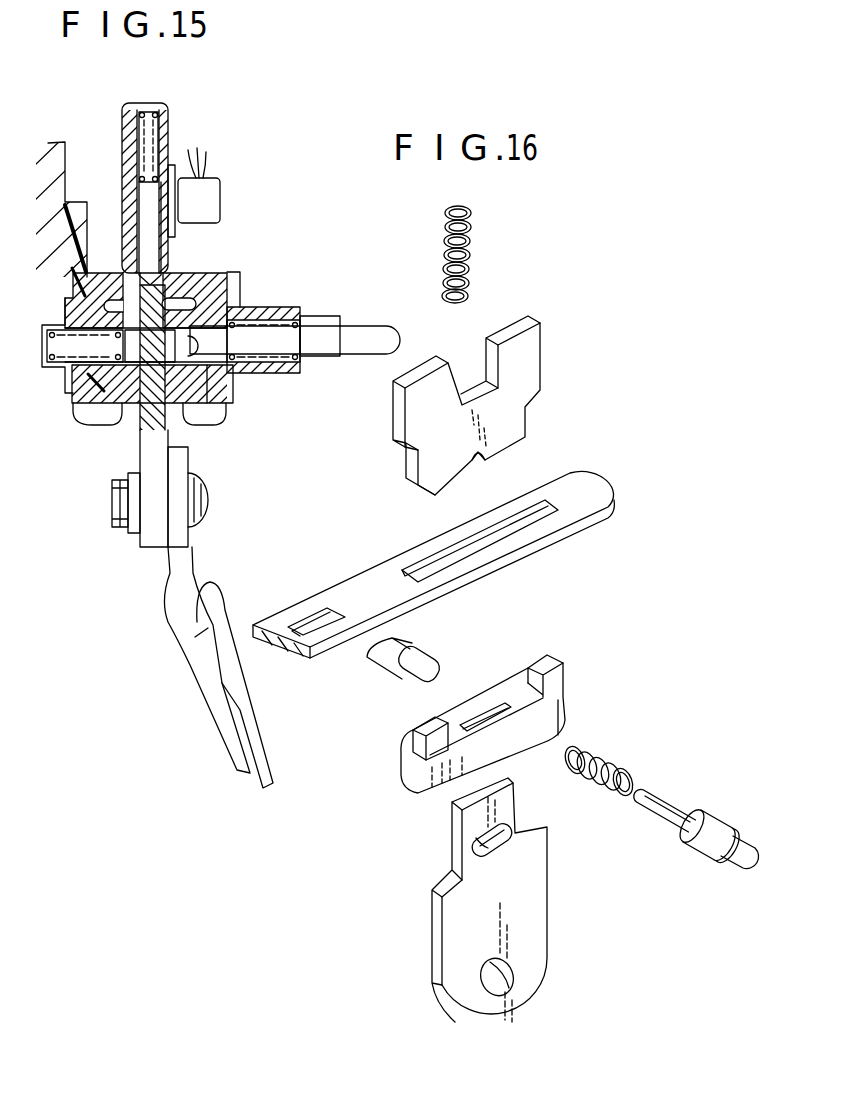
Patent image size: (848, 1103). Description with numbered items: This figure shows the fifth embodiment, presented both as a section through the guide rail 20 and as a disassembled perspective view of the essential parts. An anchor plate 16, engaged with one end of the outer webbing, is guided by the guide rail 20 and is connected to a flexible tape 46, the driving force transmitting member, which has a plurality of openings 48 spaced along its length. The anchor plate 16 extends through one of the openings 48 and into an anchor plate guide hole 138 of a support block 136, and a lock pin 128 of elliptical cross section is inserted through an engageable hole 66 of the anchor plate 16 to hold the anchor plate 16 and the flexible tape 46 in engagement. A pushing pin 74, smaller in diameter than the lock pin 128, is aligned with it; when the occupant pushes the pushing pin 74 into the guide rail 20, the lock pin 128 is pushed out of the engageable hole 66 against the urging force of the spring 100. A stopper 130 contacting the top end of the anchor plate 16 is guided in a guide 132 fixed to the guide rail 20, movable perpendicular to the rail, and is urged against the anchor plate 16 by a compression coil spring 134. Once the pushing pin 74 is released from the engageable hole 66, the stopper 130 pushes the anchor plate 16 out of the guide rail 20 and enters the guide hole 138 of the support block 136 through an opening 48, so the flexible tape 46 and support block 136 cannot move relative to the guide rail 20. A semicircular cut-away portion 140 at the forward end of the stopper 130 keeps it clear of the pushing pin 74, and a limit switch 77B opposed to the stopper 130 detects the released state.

In FIG. 15, the anchor plate 16 is at (160, 462).
In FIG. 16, the anchor plate 16 is at (552, 890).
In FIG. 15, the guide rail 20 is at (84, 420).
In FIG. 15, the flexible tape 46 is at (190, 282).
In FIG. 16, the flexible tape 46 is at (347, 588).
In FIG. 15, the openings 48 is at (160, 287).
In FIG. 16, the openings 48 is at (520, 527).
In FIG. 16, the engageable hole 66 is at (498, 852).
In FIG. 15, the pushing pin 74 is at (268, 330).
In FIG. 16, the pushing pin 74 is at (668, 803).
In FIG. 15, the limit switch 77B is at (212, 203).
In FIG. 15, the spring 100 is at (60, 368).
In FIG. 15, the lock pin 128 is at (163, 340).
In FIG. 16, the lock pin 128 is at (386, 672).
In FIG. 15, the stopper 130 is at (124, 172).
In FIG. 16, the stopper 130 is at (532, 397).
In FIG. 15, the guide 132 is at (130, 230).
In FIG. 15, the compression coil spring 134 is at (162, 113).
In FIG. 16, the compression coil spring 134 is at (478, 240).
In FIG. 15, the support block 136 is at (200, 392).
In FIG. 16, the support block 136 is at (572, 714).
In FIG. 15, the anchor plate guide hole 138 is at (140, 403).
In FIG. 16, the anchor plate guide hole 138 is at (487, 712).
In FIG. 16, the semicircular cut-away portion 140 is at (480, 480).